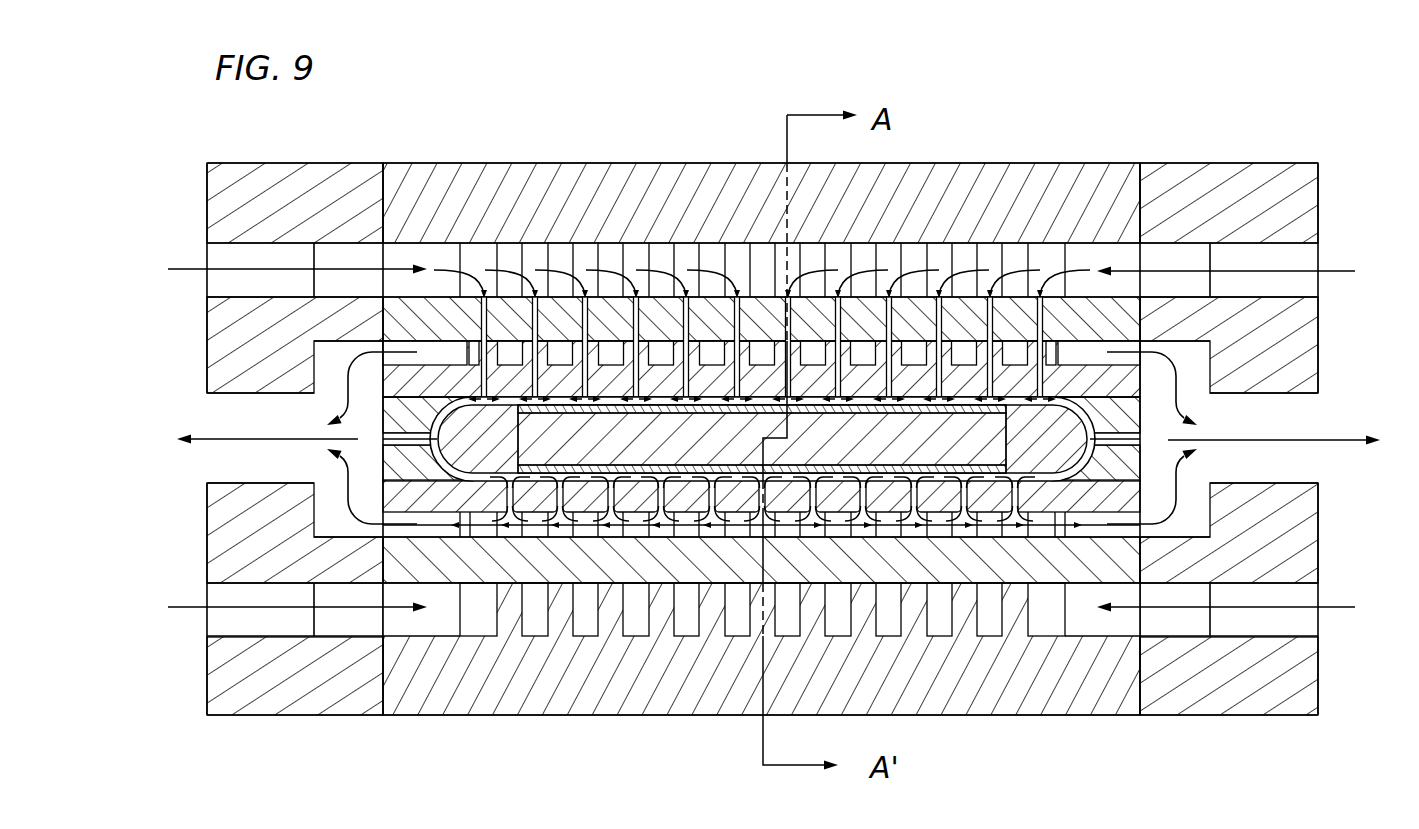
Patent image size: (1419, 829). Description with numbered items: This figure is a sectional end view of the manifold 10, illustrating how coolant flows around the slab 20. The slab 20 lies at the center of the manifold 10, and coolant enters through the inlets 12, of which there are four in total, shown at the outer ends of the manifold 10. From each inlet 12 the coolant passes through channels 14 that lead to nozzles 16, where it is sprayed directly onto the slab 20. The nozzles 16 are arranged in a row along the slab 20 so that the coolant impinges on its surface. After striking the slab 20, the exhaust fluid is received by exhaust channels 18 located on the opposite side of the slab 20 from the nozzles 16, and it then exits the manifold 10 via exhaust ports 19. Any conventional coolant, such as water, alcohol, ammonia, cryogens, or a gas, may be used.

The manifold 10 is at (1198, 122).
The inlet 12 is at (1305, 620).
The channel 14 is at (1047, 262).
The nozzle 16 is at (482, 390).
The exhaust channel 18 is at (506, 503).
The exhaust port 19 is at (1350, 482).
The slab 20 is at (1060, 425).